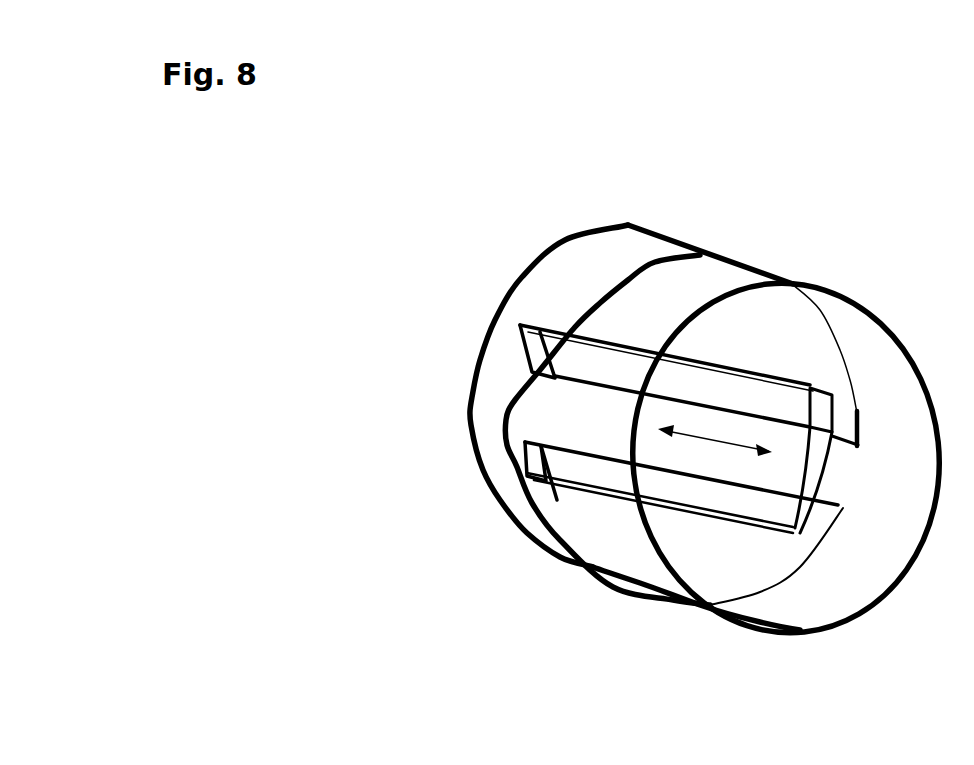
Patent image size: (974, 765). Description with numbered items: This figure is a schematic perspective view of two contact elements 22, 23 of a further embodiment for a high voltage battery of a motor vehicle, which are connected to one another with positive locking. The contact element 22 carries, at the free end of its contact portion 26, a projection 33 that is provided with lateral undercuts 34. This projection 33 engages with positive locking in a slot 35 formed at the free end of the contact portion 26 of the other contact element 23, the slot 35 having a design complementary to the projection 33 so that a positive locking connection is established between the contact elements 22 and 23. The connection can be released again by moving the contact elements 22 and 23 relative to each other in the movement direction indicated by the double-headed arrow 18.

The double-headed arrow 18 is at (713, 443).
The contact element 22 is at (791, 280).
The contact element 23 is at (658, 230).
The contact portion 26 is at (593, 250).
The projection 33 is at (537, 402).
The lateral undercuts 34 is at (537, 373).
The slot 35 is at (508, 357).